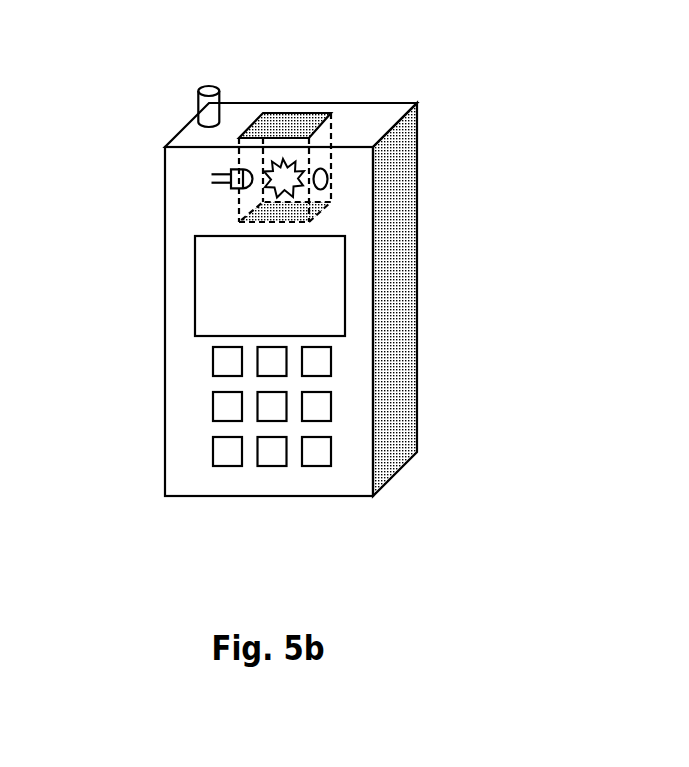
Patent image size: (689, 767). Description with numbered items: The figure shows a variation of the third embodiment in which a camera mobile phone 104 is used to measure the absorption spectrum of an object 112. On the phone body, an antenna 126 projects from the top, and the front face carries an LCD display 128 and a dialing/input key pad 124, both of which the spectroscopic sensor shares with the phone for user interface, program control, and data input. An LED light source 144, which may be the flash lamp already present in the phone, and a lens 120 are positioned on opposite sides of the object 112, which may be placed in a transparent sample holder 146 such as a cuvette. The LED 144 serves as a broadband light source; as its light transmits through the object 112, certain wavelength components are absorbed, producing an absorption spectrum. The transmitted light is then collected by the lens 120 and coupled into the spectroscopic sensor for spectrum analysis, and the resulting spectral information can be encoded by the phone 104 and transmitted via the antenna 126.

The camera mobile phone 104 is at (400, 343).
The object 112 is at (292, 160).
The lens 120 is at (330, 179).
The dialing/input key pad 124 is at (205, 467).
The antenna 126 is at (197, 100).
The LCD display 128 is at (270, 286).
The LED light source 144 is at (199, 177).
The transparent sample holder 146 is at (313, 160).